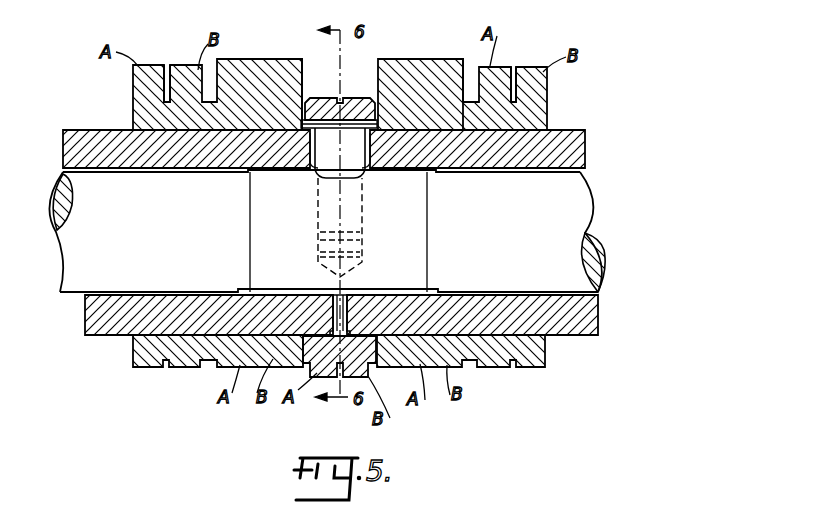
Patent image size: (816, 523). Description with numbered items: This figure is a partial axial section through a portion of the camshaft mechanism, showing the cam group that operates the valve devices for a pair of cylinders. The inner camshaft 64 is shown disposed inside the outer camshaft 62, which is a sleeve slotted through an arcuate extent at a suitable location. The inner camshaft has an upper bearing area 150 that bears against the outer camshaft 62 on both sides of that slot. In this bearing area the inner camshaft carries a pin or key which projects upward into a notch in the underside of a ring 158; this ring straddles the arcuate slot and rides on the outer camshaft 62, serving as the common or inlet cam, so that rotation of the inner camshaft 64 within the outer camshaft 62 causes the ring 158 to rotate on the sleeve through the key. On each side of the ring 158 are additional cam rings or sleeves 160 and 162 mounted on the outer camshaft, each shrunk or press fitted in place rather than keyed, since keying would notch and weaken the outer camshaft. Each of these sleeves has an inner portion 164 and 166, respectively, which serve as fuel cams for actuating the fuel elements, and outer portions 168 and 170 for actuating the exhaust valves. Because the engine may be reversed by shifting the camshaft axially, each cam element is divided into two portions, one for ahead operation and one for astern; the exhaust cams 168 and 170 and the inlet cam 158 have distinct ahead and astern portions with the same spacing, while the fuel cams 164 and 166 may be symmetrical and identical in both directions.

The outer camshaft 62 is at (88, 136).
The inner camshaft 64 is at (60, 183).
The upper bearing area 150 is at (413, 207).
The ring 158 is at (330, 378).
The cam ring 160 is at (160, 117).
The cam ring 162 is at (532, 116).
The inner portion 164 is at (256, 54).
The inner portion 166 is at (417, 54).
The outer portion 168 is at (167, 54).
The outer portion 170 is at (513, 56).